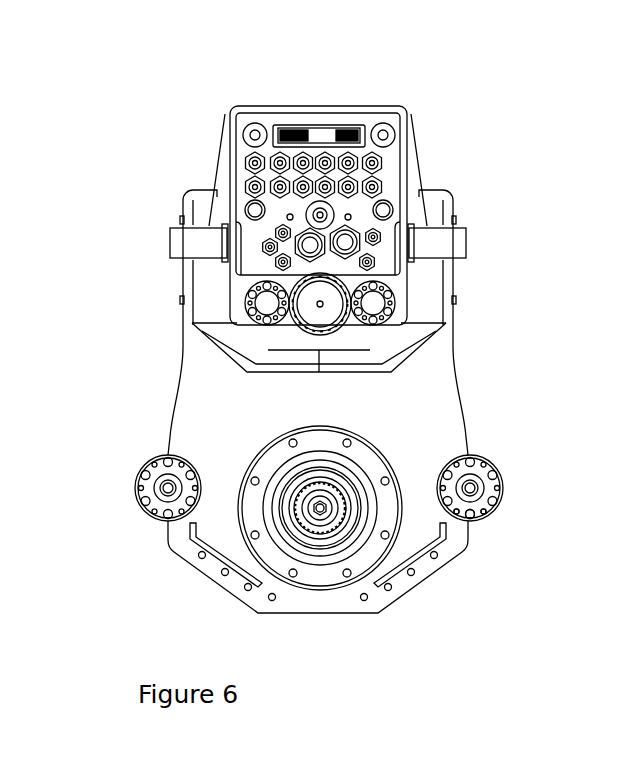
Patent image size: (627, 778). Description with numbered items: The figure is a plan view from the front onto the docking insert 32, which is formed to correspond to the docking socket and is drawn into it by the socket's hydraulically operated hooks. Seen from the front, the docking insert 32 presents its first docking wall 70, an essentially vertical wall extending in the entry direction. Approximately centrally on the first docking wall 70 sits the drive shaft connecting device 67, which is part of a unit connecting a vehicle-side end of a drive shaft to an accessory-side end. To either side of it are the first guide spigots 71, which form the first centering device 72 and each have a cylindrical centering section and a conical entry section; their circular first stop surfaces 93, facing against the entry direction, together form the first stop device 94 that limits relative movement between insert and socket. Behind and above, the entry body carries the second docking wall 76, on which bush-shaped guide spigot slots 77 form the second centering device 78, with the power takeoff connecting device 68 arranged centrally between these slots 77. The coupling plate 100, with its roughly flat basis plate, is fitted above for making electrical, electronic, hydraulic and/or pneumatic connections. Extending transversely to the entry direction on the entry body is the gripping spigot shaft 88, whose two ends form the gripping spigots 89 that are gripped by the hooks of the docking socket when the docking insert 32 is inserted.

The coupling plate 100 is at (388, 172).
The power takeoff connecting device 68 is at (332, 297).
The gripping spigot shaft 88 is at (199, 243).
The gripping spigots 89 is at (455, 242).
The guide spigot slots 77 is at (266, 304).
The second docking wall 76 is at (350, 328).
The first docking wall 70 is at (318, 363).
The second centering device 78 is at (137, 474).
The first guide spigots 71 is at (487, 489).
The first centering device 72 is at (470, 488).
The first stop surfaces 93 is at (483, 513).
The first stop device 94 is at (456, 511).
The drive shaft connecting device 67 is at (355, 533).
The docking insert 32 is at (146, 576).